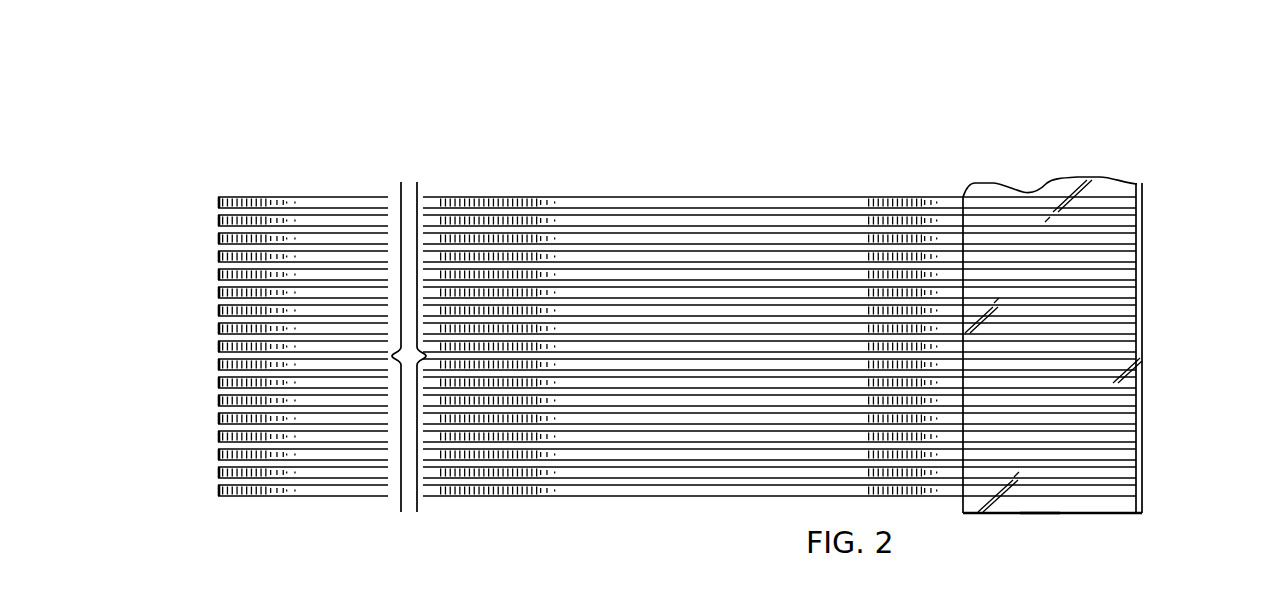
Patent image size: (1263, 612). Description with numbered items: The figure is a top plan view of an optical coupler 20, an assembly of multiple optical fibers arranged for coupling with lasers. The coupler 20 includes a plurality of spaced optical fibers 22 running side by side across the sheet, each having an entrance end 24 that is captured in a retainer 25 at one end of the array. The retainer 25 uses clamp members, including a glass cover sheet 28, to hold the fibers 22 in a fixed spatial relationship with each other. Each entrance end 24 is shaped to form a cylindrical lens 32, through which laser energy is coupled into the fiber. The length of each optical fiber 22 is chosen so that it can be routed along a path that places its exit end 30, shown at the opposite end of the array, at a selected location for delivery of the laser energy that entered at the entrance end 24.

The optical coupler 20 is at (1092, 148).
The optical fibers 22 is at (650, 197).
The entrance end 24 is at (1133, 184).
The retainer 25 is at (1042, 522).
The glass cover sheet 28 is at (1090, 503).
The exit end 30 is at (243, 196).
The cylindrical lens 32 is at (1142, 200).